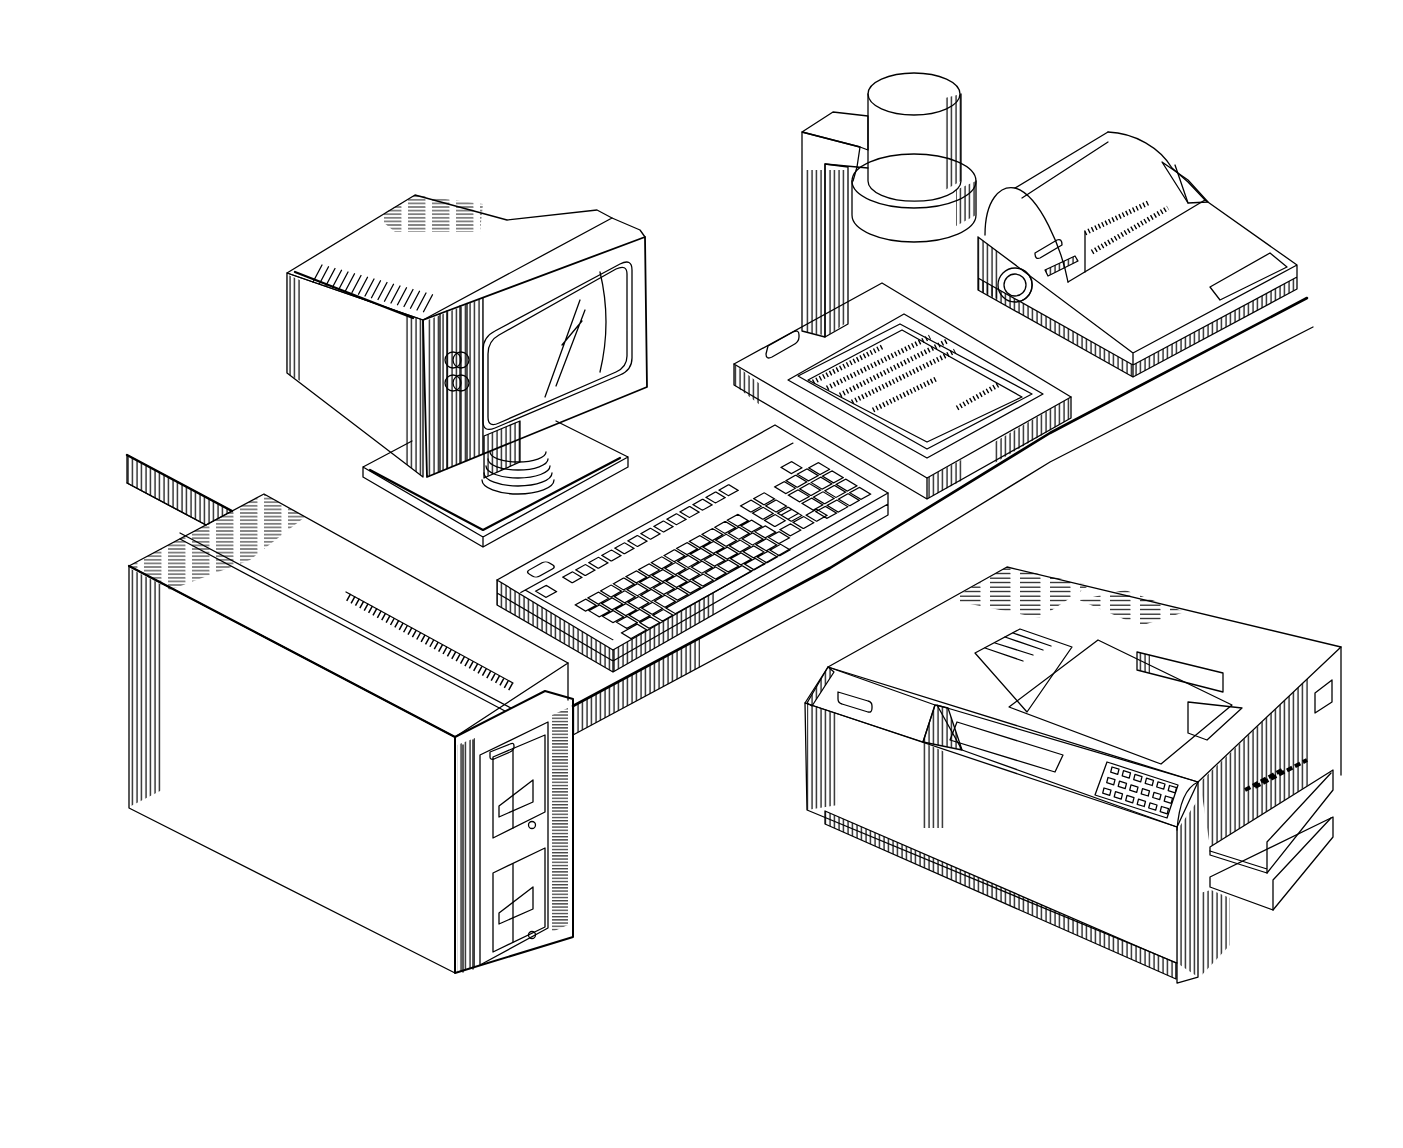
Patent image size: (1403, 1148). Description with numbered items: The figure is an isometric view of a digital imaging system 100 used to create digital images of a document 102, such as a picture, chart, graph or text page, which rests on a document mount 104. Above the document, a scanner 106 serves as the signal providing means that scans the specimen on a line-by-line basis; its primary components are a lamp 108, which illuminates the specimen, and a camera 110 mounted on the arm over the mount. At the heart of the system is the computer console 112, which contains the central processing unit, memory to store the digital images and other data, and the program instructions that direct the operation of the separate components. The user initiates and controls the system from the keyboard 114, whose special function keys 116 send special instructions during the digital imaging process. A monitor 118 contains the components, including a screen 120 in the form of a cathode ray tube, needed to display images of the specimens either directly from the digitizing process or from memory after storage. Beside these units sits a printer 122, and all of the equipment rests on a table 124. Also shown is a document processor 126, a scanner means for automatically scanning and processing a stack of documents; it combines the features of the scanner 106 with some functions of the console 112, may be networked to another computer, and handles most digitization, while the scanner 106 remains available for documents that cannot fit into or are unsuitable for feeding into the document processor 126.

The digital imaging system 100 is at (662, 160).
The document 102 is at (946, 431).
The document mount 104 is at (924, 421).
The scanner 106 is at (961, 133).
The lamp 108 is at (904, 242).
The camera 110 is at (868, 114).
The computer console 112 is at (580, 765).
The keyboard 114 is at (692, 545).
The special function keys 116 is at (708, 546).
The monitor 118 is at (480, 364).
The monitor 120 is at (578, 365).
The printer 122 is at (1200, 335).
The table 124 is at (710, 653).
The document processor 126 is at (1250, 634).